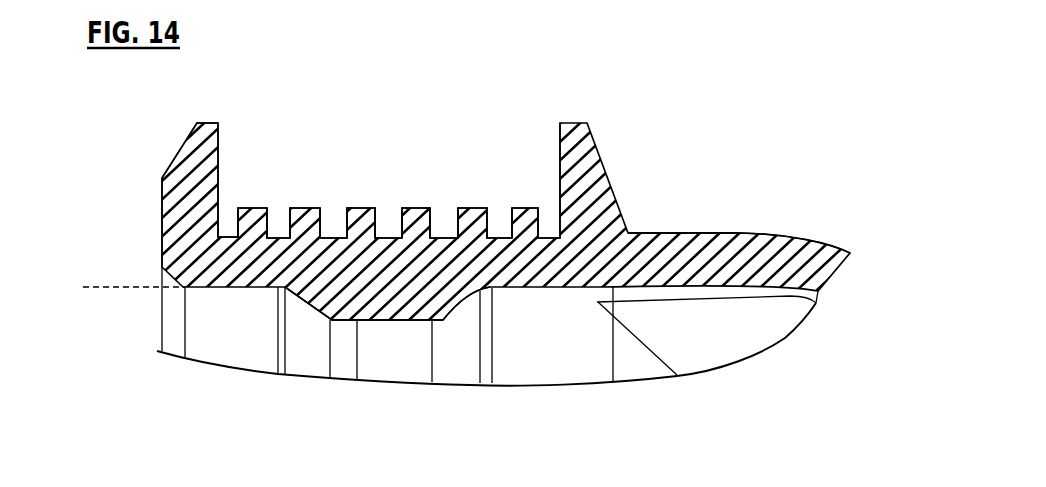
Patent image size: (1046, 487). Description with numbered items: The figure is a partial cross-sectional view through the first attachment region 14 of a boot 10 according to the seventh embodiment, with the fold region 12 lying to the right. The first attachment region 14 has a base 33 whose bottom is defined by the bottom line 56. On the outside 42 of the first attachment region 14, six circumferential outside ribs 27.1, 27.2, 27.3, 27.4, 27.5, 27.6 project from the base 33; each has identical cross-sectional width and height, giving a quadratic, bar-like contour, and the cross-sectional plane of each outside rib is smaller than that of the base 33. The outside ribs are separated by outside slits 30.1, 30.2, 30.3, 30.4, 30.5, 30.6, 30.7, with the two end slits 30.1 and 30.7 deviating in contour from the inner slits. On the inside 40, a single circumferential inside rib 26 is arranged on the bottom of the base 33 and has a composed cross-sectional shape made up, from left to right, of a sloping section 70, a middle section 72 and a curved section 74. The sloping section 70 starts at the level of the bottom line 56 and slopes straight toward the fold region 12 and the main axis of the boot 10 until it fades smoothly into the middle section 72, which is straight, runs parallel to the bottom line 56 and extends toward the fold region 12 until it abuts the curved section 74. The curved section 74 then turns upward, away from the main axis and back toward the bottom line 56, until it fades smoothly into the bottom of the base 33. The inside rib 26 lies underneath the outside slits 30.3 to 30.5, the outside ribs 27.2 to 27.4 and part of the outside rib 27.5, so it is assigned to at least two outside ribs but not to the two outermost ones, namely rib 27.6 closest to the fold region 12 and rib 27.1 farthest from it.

The boot 10 is at (121, 190).
The fold region 12 is at (778, 172).
The first attachment region 14 is at (140, 147).
The circumferential inside rib 26 is at (336, 324).
The circumferential outside rib 27.1 is at (255, 207).
The circumferential outside rib 27.2 is at (307, 207).
The circumferential outside rib 27.3 is at (362, 207).
The circumferential outside rib 27.4 is at (416, 207).
The circumferential outside rib 27.5 is at (472, 207).
The circumferential outside rib 27.6 is at (524, 207).
The outside slit 30.1 is at (232, 236).
The outside slit 30.2 is at (278, 237).
The outside slit 30.3 is at (334, 237).
The outside slit 30.4 is at (389, 237).
The outside slit 30.5 is at (445, 237).
The outside slit 30.6 is at (500, 237).
The outside slit 30.7 is at (549, 236).
The base 33 is at (282, 274).
The inside 40 is at (534, 369).
The outside 42 is at (682, 78).
The bottom line 56 is at (108, 285).
The sloping section 70 is at (310, 305).
The middle section 72 is at (383, 321).
The curved section 74 is at (457, 323).